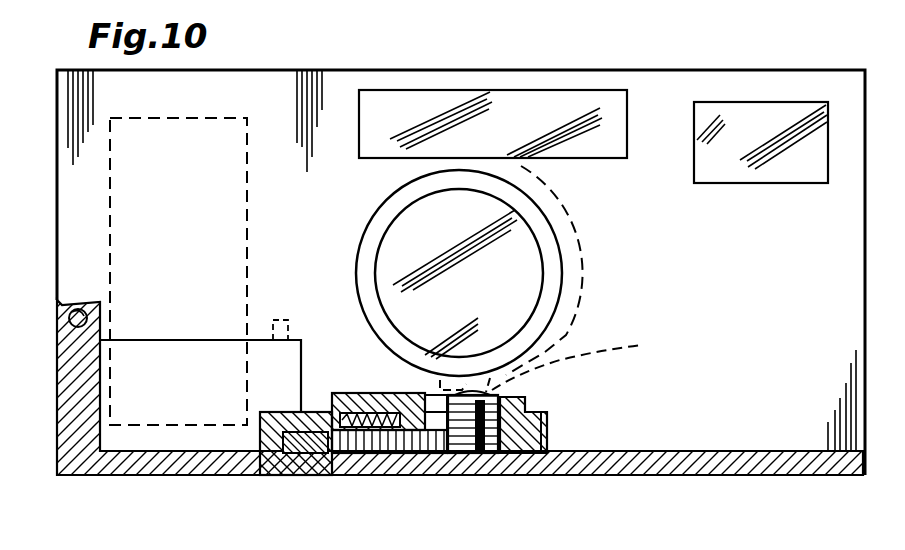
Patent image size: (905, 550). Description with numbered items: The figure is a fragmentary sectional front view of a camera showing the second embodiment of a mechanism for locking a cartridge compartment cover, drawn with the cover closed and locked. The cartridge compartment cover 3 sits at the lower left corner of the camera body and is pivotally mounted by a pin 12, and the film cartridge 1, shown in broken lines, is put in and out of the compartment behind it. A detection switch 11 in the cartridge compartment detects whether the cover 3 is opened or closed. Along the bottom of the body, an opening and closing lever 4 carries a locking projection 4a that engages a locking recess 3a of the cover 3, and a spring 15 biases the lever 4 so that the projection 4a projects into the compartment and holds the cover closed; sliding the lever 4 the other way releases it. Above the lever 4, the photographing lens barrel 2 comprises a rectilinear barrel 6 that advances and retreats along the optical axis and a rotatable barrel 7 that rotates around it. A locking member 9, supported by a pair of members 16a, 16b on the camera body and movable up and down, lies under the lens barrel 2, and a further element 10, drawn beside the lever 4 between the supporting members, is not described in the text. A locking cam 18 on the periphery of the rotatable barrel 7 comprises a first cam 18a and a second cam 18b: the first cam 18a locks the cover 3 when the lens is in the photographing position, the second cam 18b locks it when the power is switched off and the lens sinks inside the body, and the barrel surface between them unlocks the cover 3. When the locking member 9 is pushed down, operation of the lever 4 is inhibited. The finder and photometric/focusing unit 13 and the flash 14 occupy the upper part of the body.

The film cartridge 1 is at (200, 118).
The photographing lens barrel 2 is at (534, 279).
The cartridge compartment cover 3 is at (122, 477).
The locking recess 3a is at (270, 477).
The opening and closing lever 4 is at (372, 478).
The locking projection 4a is at (308, 477).
The rectilinear barrel 6 is at (543, 272).
The rotatable barrel 7 is at (562, 243).
The locking member 9 is at (488, 398).
The drive shaft member 10 is at (487, 455).
The detection switch 11 is at (283, 320).
The pin 12 is at (62, 308).
The finder and photometric/focusing unit 13 is at (570, 90).
The flash 14 is at (764, 102).
The spring 15 is at (405, 458).
The supporting member 16a is at (535, 475).
The supporting member 16b is at (548, 430).
The locking cam 18 is at (619, 344).
The first cam 18a is at (577, 318).
The second cam 18b is at (590, 361).